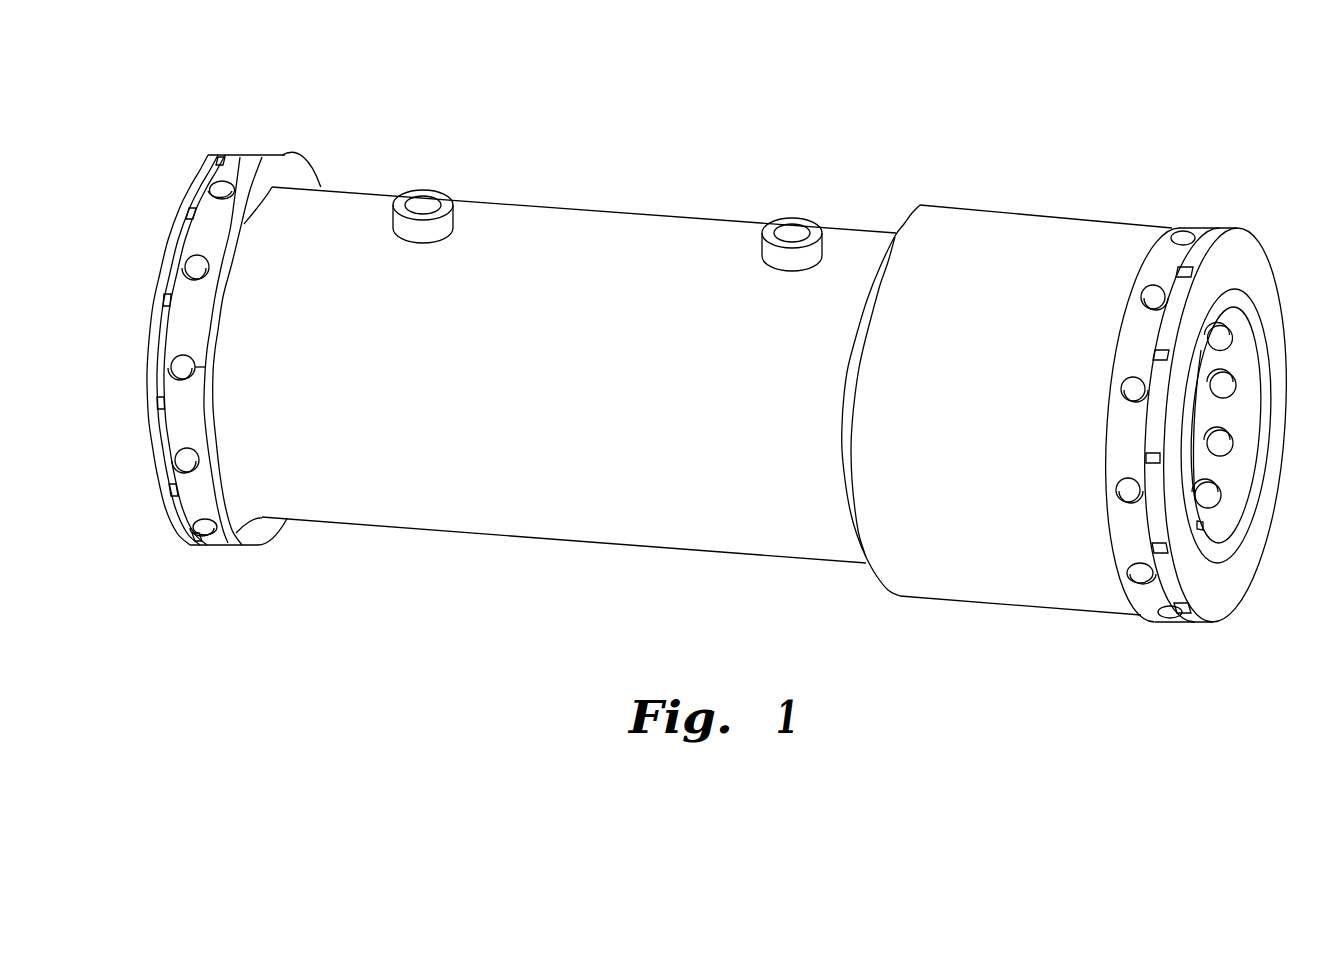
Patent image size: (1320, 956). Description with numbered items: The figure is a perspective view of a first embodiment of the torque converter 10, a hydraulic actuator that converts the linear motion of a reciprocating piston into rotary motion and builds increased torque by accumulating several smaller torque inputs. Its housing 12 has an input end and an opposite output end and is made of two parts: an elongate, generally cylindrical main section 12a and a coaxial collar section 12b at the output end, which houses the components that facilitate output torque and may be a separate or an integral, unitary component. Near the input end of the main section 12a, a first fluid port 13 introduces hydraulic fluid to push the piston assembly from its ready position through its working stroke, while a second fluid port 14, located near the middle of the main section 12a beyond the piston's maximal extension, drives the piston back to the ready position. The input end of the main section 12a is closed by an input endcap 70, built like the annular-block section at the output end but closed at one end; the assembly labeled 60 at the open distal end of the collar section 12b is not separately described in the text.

The torque converter 10 is at (603, 131).
The housing 12 is at (574, 531).
The main section 12a is at (554, 405).
The collar section 12b is at (1022, 425).
The first fluid port 13 is at (427, 187).
The second fluid port 14 is at (797, 218).
The end flange 60 is at (1213, 171).
The input endcap 70 is at (223, 78).